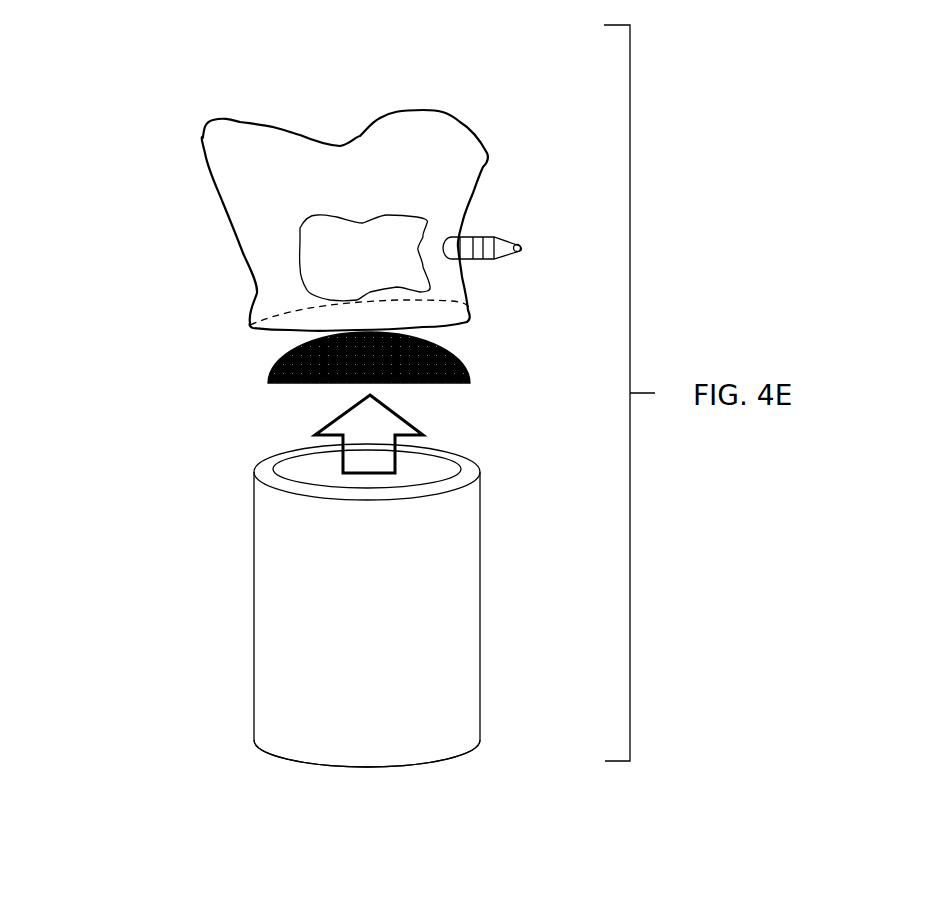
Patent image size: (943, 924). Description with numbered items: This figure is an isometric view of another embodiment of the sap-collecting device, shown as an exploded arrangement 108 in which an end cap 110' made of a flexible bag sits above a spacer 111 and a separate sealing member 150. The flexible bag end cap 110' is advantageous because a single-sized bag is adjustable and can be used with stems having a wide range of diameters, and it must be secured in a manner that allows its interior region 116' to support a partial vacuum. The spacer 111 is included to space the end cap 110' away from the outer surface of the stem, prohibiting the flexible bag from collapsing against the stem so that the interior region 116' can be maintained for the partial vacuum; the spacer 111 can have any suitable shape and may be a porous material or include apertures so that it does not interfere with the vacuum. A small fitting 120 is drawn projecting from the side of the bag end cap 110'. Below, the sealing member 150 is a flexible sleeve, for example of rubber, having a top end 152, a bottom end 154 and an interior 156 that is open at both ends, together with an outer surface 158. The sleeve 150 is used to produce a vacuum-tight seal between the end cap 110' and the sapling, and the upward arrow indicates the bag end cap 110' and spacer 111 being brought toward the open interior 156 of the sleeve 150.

The dental restoration assembly 108 is at (162, 143).
The end cap 110' is at (345, 201).
The interior region 116' is at (308, 258).
The sprue / connector 120 is at (519, 260).
The spacer 111 is at (268, 366).
The sealing member 150 is at (261, 418).
The top end 152 is at (465, 462).
The interior 156 is at (303, 472).
The outer surface 158 is at (443, 545).
The bottom end 154 is at (267, 750).